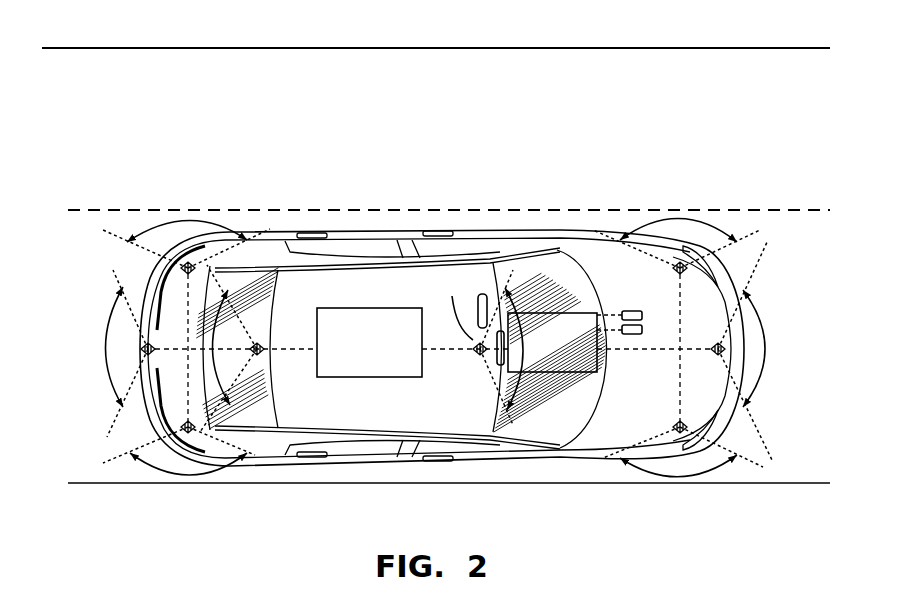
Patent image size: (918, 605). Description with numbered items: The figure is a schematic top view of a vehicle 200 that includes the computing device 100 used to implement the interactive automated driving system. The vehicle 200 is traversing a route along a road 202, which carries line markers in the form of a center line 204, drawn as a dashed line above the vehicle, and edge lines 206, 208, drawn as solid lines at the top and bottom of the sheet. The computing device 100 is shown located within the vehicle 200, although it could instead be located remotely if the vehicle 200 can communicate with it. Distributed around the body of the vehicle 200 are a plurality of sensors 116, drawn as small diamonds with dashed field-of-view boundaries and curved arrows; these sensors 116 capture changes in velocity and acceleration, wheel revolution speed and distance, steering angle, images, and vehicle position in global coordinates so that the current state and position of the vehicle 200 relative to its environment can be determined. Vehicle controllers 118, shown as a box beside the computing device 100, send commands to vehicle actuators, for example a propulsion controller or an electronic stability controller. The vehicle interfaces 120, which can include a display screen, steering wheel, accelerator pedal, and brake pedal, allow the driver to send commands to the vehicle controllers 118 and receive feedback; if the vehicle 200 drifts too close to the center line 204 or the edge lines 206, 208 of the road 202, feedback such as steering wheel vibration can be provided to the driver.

The computing device 100 is at (380, 378).
The sensors 116 is at (263, 343).
The vehicle controllers 118 is at (597, 355).
The vehicle interfaces 120 is at (480, 295).
The vehicle 200 is at (407, 231).
The road 202 is at (790, 458).
The center line 204 is at (131, 210).
The edge line 206 is at (243, 48).
The edge line 208 is at (103, 484).